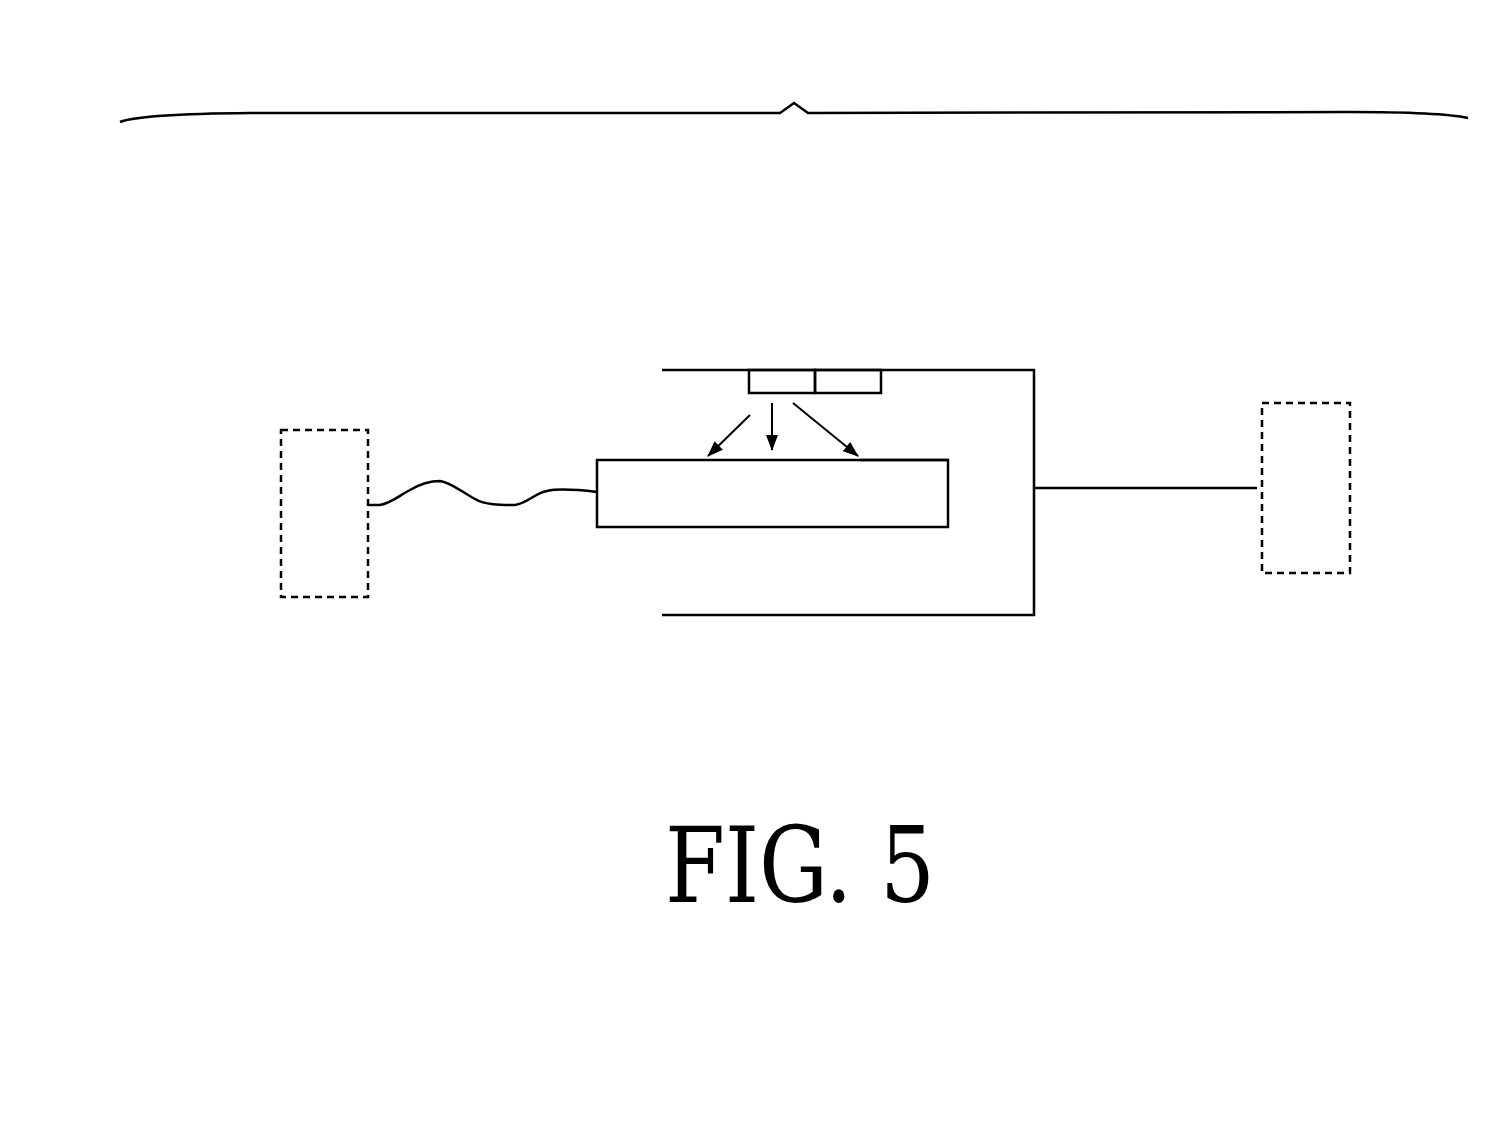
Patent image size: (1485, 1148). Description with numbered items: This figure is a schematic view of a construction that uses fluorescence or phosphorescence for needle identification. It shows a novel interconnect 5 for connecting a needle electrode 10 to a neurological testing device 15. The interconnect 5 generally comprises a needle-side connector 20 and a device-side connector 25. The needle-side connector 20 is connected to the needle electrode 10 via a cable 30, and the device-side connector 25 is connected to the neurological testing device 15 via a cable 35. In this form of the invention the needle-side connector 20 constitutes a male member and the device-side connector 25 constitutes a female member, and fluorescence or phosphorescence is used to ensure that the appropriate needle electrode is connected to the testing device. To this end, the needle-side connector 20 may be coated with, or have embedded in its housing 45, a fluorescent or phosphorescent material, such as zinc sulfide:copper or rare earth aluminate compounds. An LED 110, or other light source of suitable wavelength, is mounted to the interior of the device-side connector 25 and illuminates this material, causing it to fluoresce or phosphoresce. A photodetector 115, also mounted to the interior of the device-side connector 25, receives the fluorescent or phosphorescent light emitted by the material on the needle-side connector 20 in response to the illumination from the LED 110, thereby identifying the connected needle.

The interconnect 5 is at (794, 94).
The needle electrode 10 is at (298, 598).
The neurological testing device 15 is at (1321, 576).
The needle-side connector 20 is at (619, 457).
The device-side connector 25 is at (1040, 410).
The cable 30 is at (477, 505).
The cable 35 is at (1151, 492).
The housing 45 is at (908, 468).
The LED 110 is at (780, 368).
The photodetector 115 is at (862, 368).